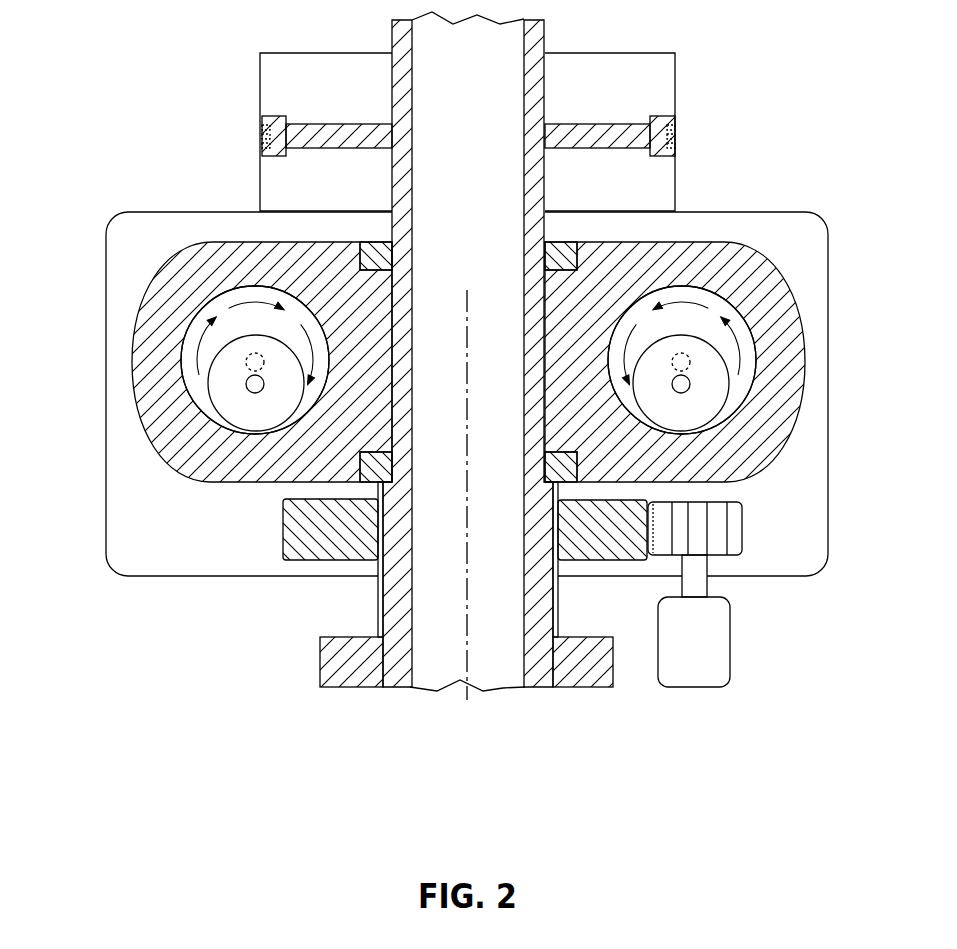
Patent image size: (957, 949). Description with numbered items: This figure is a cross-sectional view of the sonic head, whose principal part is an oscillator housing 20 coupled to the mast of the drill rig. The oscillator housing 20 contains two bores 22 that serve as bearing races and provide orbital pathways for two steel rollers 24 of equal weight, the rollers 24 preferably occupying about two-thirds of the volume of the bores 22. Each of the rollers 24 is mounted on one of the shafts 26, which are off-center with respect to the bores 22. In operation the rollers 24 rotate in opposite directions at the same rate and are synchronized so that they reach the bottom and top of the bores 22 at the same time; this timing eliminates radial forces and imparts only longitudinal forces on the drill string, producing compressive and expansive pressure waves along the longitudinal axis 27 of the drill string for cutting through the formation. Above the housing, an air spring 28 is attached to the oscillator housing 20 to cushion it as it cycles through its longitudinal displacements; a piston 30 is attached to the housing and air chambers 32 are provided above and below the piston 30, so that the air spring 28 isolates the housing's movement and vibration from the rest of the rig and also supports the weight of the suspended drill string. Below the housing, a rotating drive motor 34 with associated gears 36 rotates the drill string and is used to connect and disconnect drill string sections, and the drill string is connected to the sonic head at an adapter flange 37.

The oscillator housing 20 is at (772, 210).
The bores 22 is at (218, 297).
The steel rollers 24 is at (252, 410).
The shafts 26 is at (246, 386).
The longitudinal axis 27 is at (467, 520).
The air spring 28 is at (675, 90).
The piston 30 is at (587, 125).
The air chambers 32 is at (348, 95).
The rotating drive motor 34 is at (725, 638).
The gears 36 is at (577, 560).
The adapter flange 37 is at (607, 687).